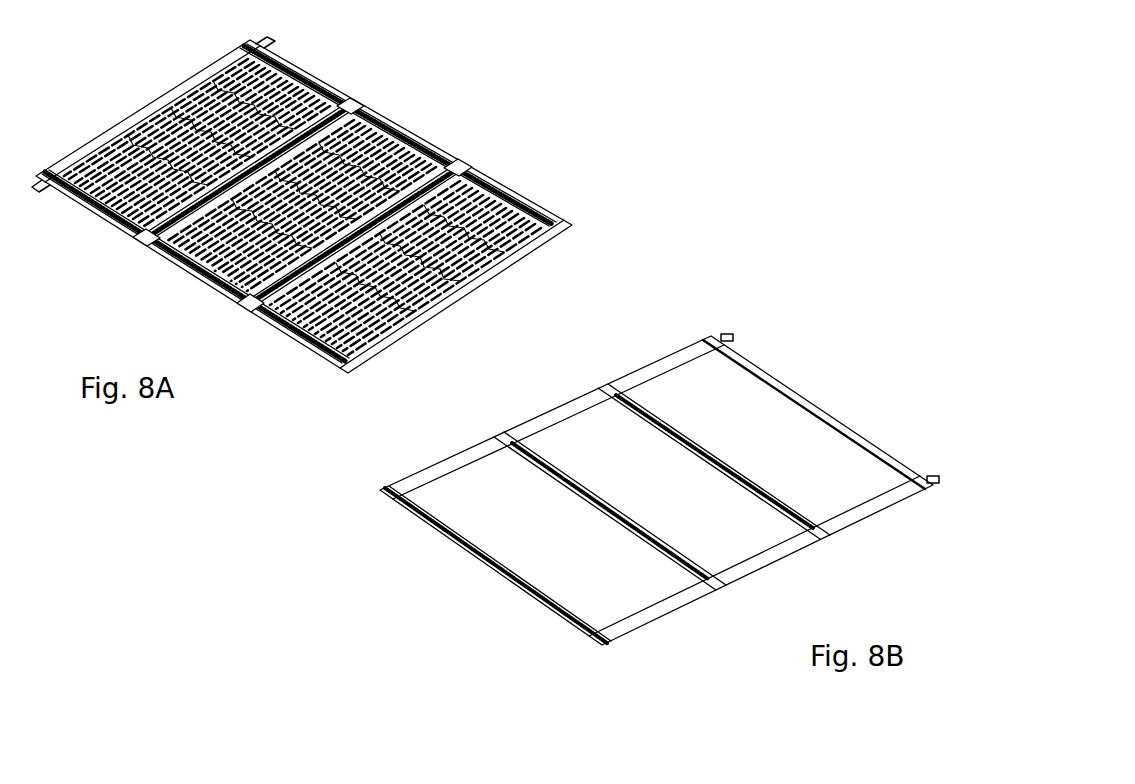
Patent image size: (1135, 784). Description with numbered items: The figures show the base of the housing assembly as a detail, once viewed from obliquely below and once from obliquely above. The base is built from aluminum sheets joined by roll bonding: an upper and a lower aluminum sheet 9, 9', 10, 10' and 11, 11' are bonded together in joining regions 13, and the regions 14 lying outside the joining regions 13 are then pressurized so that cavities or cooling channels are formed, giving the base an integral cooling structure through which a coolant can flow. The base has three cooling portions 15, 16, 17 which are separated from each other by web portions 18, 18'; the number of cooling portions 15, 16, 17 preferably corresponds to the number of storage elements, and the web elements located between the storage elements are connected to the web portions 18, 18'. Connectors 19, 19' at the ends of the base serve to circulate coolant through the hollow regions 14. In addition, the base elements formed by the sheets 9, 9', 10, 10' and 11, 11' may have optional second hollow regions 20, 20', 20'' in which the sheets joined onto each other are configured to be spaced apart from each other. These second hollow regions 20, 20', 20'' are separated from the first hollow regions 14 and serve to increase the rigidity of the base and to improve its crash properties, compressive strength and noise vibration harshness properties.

In FIG. 8B, the aluminum sheet 9 is at (656, 490).
In FIG. 8A, the aluminum sheet 9' is at (304, 206).
In FIG. 8B, the aluminum sheet 10 is at (489, 422).
In FIG. 8A, the aluminum sheet 10' is at (322, 158).
In FIG. 8B, the aluminum sheet 11 is at (639, 362).
In FIG. 8A, the aluminum sheet 11' is at (398, 127).
In FIG. 8A, the joining region 13 is at (497, 250).
In FIG. 8A, the hollow region 14 is at (443, 277).
In FIG. 8A, the cooling portion 15 is at (340, 337).
In FIG. 8B, the cooling portion 15 is at (610, 600).
In FIG. 8A, the cooling portion 16 is at (213, 290).
In FIG. 8B, the cooling portion 16 is at (723, 553).
In FIG. 8A, the cooling portion 17 is at (103, 228).
In FIG. 8B, the cooling portion 17 is at (803, 423).
In FIG. 8B, the web portion 18 is at (662, 487).
In FIG. 8A, the web portion 18' is at (323, 180).
In FIG. 8B, the connector 19 is at (742, 311).
In FIG. 8B, the connector 19' is at (930, 449).
In FIG. 8A, the second hollow region 20 is at (405, 293).
In FIG. 8A, the second hollow region 20' is at (268, 223).
In FIG. 8A, the second hollow region 20'' is at (197, 142).